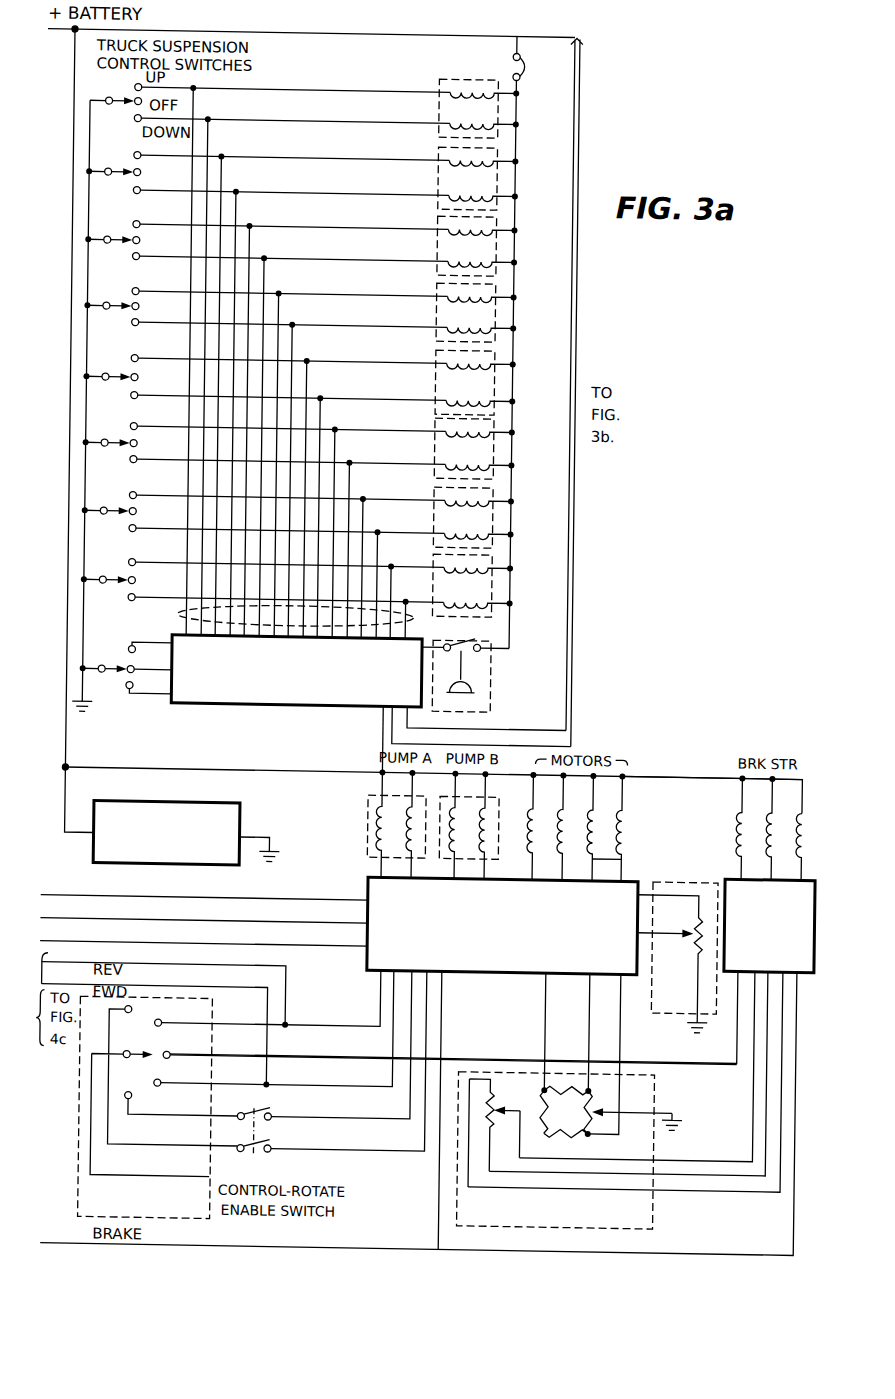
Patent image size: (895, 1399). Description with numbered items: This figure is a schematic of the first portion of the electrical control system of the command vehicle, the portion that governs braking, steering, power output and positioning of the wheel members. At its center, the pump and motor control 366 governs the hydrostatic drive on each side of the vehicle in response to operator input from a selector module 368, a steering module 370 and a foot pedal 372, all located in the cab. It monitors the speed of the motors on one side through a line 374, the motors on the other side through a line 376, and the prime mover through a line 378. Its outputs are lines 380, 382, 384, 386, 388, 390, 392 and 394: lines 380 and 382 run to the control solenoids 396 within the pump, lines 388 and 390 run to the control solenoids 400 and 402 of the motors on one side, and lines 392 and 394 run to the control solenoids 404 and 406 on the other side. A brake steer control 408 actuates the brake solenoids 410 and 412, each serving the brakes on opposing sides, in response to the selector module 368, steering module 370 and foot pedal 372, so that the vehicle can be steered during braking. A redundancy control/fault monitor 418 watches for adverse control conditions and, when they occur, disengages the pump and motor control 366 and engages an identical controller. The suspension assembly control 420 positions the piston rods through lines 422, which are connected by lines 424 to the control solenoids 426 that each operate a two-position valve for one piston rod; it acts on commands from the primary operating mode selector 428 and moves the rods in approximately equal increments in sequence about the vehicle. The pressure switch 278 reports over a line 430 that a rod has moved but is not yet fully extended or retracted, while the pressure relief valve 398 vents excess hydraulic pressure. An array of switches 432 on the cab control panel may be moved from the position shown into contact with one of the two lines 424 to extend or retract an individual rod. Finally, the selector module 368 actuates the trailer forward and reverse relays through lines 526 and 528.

The pressure switch 278 is at (499, 697).
The pump and motor control 366 is at (534, 970).
The selector module 368 is at (86, 1108).
The steering module 370 is at (468, 1219).
The foot pedal 372 is at (686, 1012).
The line 374 is at (205, 895).
The line 376 is at (218, 918).
The line 378 is at (218, 941).
The line 380 is at (390, 845).
The line 382 is at (420, 850).
The line 384 is at (463, 852).
The line 386 is at (493, 856).
The line 388 is at (485, 838).
The line 390 is at (575, 848).
The line 392 is at (620, 858).
The line 394 is at (752, 830).
The control solenoids 396 is at (391, 763).
The pressure relief valve 398 is at (508, 767).
The control solenoid 400 is at (634, 767).
The control solenoid 402 is at (548, 803).
The control solenoid 404 is at (578, 806).
The control solenoid 406 is at (608, 812).
The brake steer control 408 is at (746, 968).
The brake solenoid 410 is at (780, 812).
The brake solenoid 412 is at (810, 808).
The redundancy control/fault monitor 418 is at (104, 846).
The suspension assembly control 420 is at (288, 708).
The lines 422 is at (186, 612).
The lines 424 is at (445, 561).
The control solenoids 426 is at (499, 553).
The primary operating mode selector 428 is at (132, 633).
The line 430 is at (441, 638).
The switches 432 is at (128, 577).
The line 526 is at (282, 1016).
The line 528 is at (298, 988).